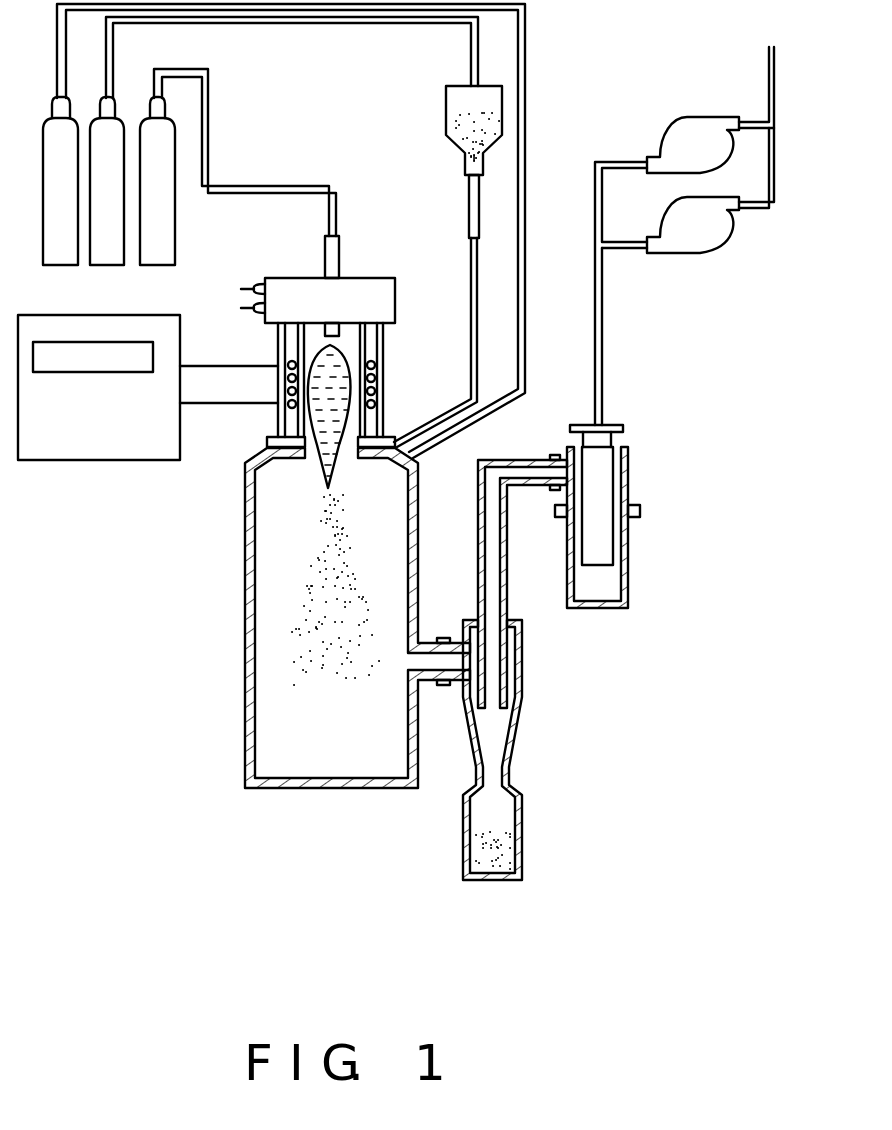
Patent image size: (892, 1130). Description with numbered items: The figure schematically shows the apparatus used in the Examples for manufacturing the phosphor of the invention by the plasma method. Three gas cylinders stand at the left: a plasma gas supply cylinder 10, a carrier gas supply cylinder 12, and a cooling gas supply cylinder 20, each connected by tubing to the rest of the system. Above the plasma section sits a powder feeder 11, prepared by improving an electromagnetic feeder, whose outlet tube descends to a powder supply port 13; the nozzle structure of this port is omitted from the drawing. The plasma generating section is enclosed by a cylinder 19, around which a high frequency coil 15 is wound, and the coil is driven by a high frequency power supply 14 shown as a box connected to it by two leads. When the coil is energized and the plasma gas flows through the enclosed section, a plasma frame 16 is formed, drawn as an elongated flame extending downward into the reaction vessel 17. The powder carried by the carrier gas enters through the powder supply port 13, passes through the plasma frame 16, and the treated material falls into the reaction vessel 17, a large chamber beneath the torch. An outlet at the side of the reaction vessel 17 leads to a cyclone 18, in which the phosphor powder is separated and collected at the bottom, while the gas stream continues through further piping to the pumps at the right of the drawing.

The plasma gas supply cylinder 10 is at (158, 256).
The powder feeder 11 is at (455, 119).
The carrier gas supply cylinder 12 is at (107, 256).
The powder supply port 13 is at (372, 433).
The high frequency power supply 14 is at (85, 450).
The high frequency coil 15 is at (290, 405).
The plasma frame 16 is at (320, 458).
The reaction vessel 17 is at (298, 788).
The cyclone 18 is at (522, 857).
The cylinder covering a plasma generating section 19 is at (368, 337).
The cooling gas supply cylinder 20 is at (58, 256).